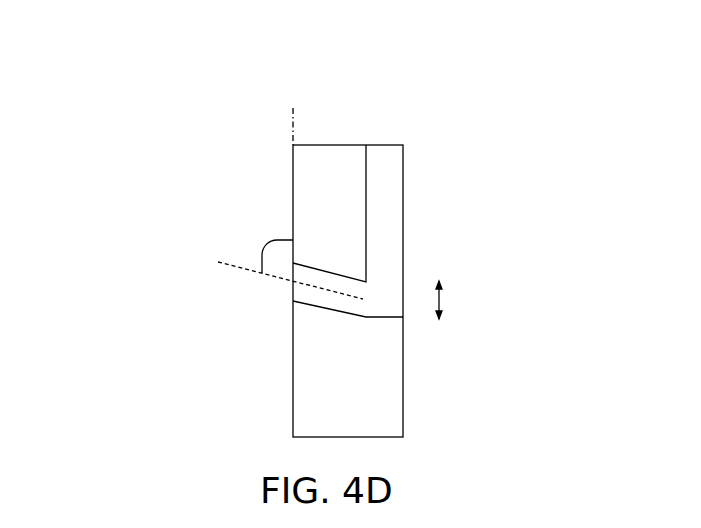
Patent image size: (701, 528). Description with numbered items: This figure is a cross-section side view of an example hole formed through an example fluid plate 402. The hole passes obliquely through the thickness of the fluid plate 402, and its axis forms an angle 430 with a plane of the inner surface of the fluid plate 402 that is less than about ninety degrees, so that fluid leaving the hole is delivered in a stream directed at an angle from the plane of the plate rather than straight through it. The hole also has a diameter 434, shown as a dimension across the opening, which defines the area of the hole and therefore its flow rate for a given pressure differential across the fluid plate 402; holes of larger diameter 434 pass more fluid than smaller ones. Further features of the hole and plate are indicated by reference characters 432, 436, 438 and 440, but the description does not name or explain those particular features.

The fluid plate 402 is at (315, 187).
The angle 430 is at (388, 172).
The bend region 432 is at (250, 230).
The diameter 434 is at (442, 298).
The reference line 436 is at (283, 278).
The reference axis 438 is at (293, 118).
The curved transition 440 is at (262, 249).